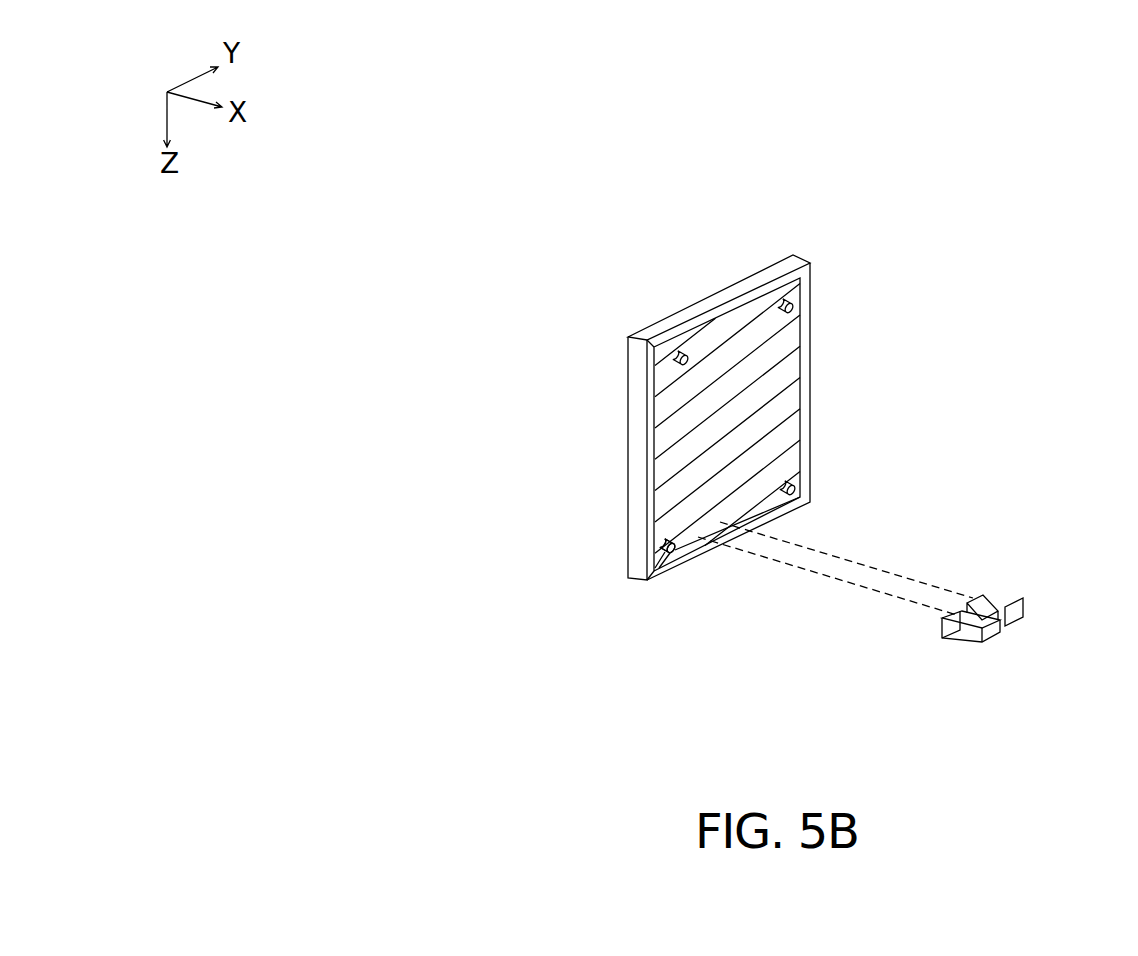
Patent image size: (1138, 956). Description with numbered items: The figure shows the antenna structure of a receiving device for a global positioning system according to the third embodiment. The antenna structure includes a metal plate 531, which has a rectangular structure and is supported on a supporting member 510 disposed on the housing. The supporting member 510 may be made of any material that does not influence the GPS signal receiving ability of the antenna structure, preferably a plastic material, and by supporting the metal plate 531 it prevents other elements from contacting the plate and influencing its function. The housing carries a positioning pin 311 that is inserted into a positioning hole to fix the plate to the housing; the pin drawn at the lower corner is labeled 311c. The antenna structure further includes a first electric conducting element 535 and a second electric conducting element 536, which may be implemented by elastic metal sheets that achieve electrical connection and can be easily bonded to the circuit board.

The supporting member 510 is at (808, 269).
The metal plate 531 is at (793, 399).
The positioning pin 311 is at (668, 540).
The light emitting unit 311c is at (660, 550).
The first electric conducting element 535 is at (953, 617).
The second electric conducting element 536 is at (997, 610).